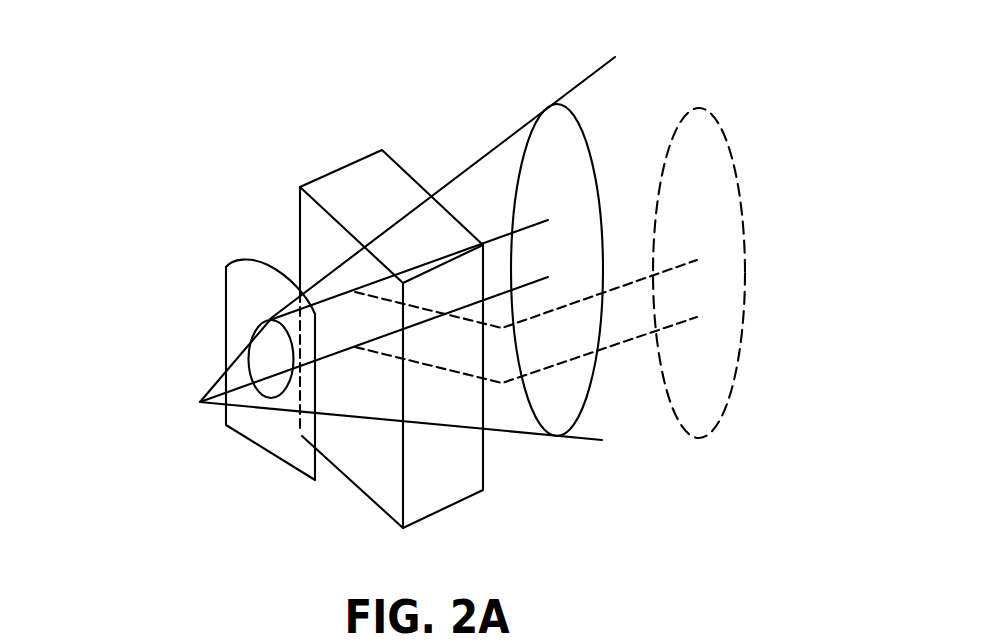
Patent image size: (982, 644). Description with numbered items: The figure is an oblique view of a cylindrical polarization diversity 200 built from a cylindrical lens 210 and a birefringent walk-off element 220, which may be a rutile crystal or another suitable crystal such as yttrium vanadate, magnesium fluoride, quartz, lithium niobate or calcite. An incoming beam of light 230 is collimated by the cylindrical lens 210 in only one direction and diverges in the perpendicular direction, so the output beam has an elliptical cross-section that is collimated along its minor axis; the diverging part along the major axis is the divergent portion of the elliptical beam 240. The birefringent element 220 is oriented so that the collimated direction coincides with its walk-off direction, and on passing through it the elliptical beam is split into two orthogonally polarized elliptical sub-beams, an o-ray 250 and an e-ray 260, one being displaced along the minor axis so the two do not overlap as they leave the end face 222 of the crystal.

The cylindrical polarization diversity 200 is at (182, 98).
The cylindrical lens 210 is at (276, 435).
The birefringent walk-off element 220 is at (455, 477).
The end face 222 is at (485, 467).
The incoming beam of light 230 is at (198, 400).
The divergent portion of the elliptical beam 240 is at (483, 153).
The o-ray 250 is at (533, 220).
The e-ray 260 is at (684, 262).